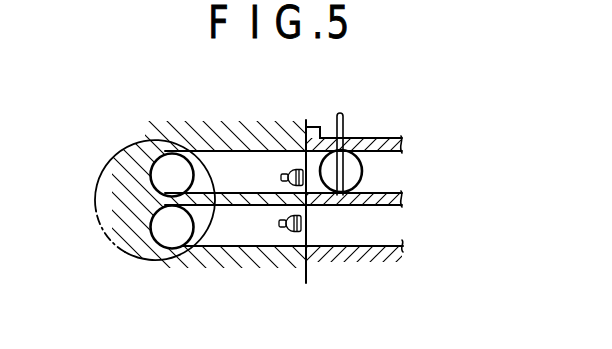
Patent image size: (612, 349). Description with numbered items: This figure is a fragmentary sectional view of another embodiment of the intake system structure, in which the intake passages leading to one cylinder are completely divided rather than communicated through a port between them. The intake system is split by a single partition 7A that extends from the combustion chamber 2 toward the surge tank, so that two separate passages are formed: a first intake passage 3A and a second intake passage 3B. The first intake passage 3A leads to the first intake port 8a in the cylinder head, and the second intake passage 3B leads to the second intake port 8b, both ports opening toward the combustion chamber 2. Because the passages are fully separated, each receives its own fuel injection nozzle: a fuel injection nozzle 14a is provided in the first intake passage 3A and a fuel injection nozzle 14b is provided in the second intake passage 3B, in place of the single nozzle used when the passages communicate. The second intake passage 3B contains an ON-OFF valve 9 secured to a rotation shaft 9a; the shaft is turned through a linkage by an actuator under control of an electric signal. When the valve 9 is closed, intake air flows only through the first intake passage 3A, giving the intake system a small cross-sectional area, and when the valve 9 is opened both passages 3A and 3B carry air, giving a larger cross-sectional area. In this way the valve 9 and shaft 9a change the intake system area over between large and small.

The combustion chamber 2 is at (118, 250).
The first intake passage 3A is at (237, 222).
The second intake passage 3B is at (218, 166).
The partition 7A is at (245, 190).
The first intake port 8a is at (177, 237).
The second intake port 8b is at (168, 170).
The ON-OFF valve 9 is at (357, 160).
The rotation shaft 9a is at (345, 118).
The fuel injection nozzle 14a is at (288, 232).
The fuel injection nozzle 14b is at (291, 169).